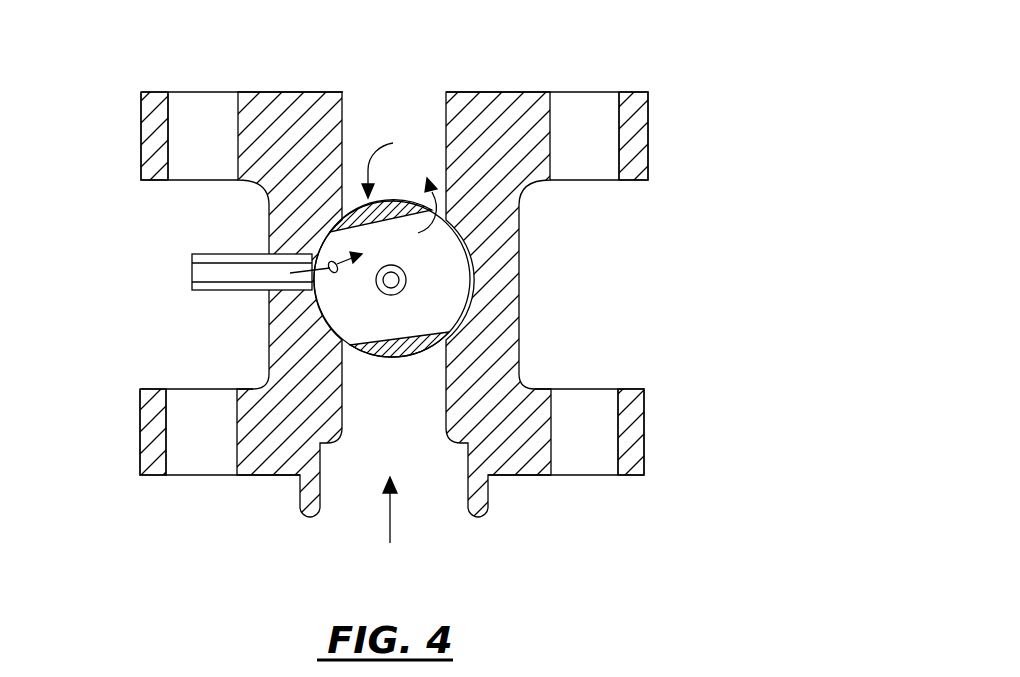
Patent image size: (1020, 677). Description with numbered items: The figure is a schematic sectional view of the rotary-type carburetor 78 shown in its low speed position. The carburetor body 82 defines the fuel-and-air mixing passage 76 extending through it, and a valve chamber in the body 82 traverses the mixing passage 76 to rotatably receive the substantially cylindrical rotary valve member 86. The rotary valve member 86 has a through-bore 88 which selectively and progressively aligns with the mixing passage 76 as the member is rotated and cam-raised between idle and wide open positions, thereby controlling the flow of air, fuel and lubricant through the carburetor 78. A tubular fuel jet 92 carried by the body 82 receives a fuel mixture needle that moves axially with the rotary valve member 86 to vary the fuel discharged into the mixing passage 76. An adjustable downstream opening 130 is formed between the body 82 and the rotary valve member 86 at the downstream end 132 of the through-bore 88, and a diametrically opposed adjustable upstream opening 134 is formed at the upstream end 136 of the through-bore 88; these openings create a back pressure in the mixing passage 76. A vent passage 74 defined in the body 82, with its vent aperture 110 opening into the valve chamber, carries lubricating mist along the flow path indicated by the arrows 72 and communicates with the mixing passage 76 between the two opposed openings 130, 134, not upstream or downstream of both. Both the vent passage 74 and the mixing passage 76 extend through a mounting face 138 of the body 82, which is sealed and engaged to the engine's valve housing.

The rotary-type carburetor 78 is at (692, 98).
The carburetor body 82 is at (270, 463).
The mounting face 138 is at (285, 92).
The adjustable downstream opening 130 is at (450, 227).
The adjustable upstream opening 134 is at (350, 345).
The rotary valve member 86 is at (396, 162).
The through-bore 88 is at (437, 282).
The tubular fuel jet 92 is at (402, 290).
The downstream end 132 is at (438, 245).
The vent passage 74 is at (210, 272).
The flow path arrows 72 is at (337, 273).
The vent aperture 110 is at (318, 272).
The upstream end 136 is at (323, 317).
The fuel-and-air mixing passage 76 is at (410, 422).